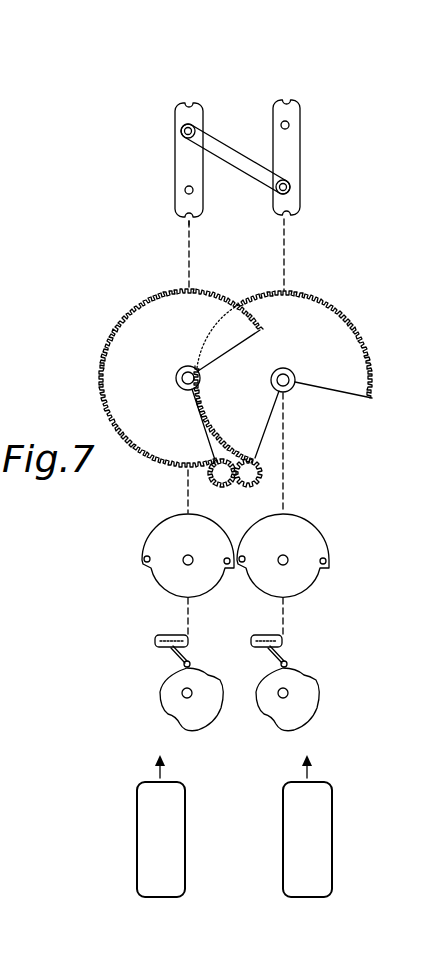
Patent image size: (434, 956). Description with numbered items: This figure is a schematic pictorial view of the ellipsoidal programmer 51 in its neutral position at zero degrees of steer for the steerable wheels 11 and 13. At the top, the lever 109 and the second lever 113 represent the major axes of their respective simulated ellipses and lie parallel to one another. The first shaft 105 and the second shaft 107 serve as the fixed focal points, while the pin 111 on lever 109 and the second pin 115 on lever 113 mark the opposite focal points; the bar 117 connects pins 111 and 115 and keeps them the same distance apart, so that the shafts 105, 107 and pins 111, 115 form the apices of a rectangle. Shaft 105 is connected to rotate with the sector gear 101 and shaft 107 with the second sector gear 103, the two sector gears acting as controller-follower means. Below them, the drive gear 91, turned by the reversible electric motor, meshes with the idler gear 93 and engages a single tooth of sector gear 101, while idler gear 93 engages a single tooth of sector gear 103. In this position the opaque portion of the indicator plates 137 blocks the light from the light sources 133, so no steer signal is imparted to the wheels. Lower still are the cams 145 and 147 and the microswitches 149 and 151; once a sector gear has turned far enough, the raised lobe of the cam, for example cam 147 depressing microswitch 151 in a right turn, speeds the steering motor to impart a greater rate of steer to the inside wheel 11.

The ellipsoidal programmer 51 is at (265, 94).
The first shaft 105 is at (290, 125).
The second shaft 107 is at (185, 192).
The lever 109 is at (289, 167).
The pin 111 is at (290, 189).
The second lever 113 is at (190, 167).
The second pin 115 is at (181, 131).
The bar 117 is at (230, 150).
The sector gear 101 is at (371, 384).
The second sector gear 103 is at (116, 388).
The idler gear 93 is at (212, 484).
The drive gear 91 is at (243, 489).
The indicator plate 137 is at (303, 527).
The light source 133 is at (329, 558).
The microswitch 149 is at (176, 636).
The microswitch 151 is at (272, 635).
The cam 145 is at (164, 698).
The cam 147 is at (311, 689).
The steerable wheel 13 is at (170, 818).
The steerable wheel 11 is at (302, 820).